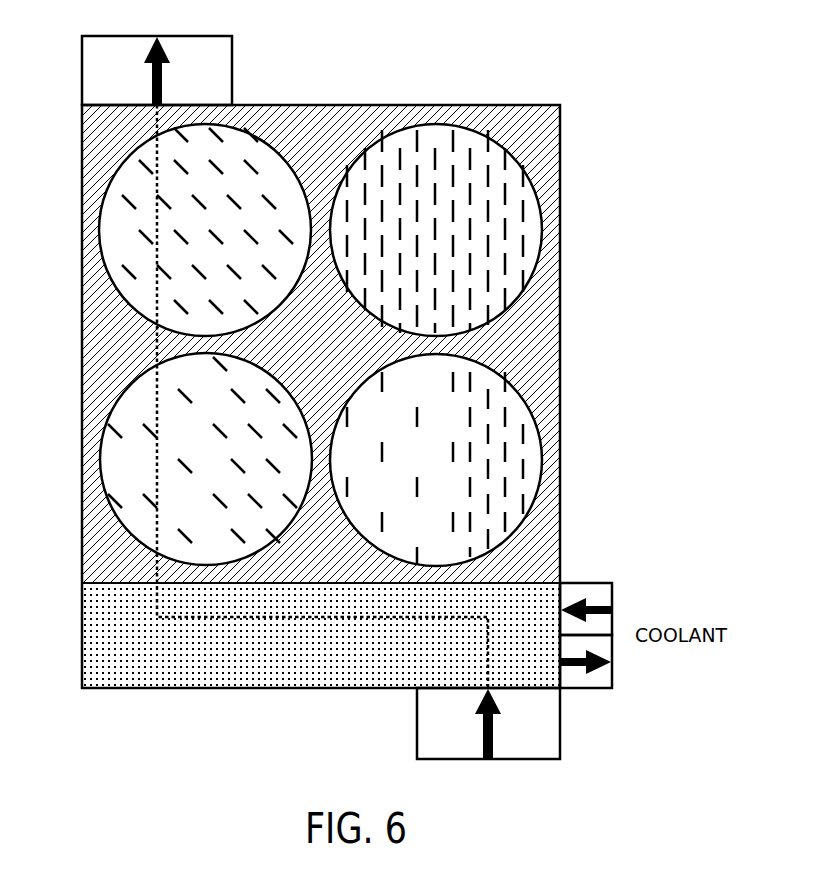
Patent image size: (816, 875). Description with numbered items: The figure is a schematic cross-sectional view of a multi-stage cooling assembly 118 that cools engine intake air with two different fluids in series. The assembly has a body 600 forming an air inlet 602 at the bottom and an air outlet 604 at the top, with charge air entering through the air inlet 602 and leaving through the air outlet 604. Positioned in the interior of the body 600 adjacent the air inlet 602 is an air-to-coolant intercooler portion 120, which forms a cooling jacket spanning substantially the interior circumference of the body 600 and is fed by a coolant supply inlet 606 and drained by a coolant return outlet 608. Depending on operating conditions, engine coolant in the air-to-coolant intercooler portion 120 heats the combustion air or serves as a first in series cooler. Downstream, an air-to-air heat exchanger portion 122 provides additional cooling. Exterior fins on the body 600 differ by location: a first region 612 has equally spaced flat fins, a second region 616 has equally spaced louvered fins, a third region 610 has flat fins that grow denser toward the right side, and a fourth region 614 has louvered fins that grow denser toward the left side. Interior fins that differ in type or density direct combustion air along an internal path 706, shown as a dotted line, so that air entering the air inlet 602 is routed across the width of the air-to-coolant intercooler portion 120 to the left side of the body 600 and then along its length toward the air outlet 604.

The multi-stage cooling assembly 118 is at (647, 54).
The air-to-coolant intercooler portion 120 is at (306, 645).
The air-to-air heat exchanger portion 122 is at (306, 355).
The body 600 is at (291, 396).
The air inlet 602 is at (417, 728).
The air outlet 604 is at (82, 72).
The coolant supply inlet 606 is at (595, 583).
The coolant return outlet 608 is at (582, 688).
The third region of exterior fins 610 is at (483, 365).
The first region of exterior fins 612 is at (497, 143).
The fourth region of exterior fins 614 is at (160, 363).
The second region of exterior fins 616 is at (131, 143).
The internal path 706 is at (160, 620).